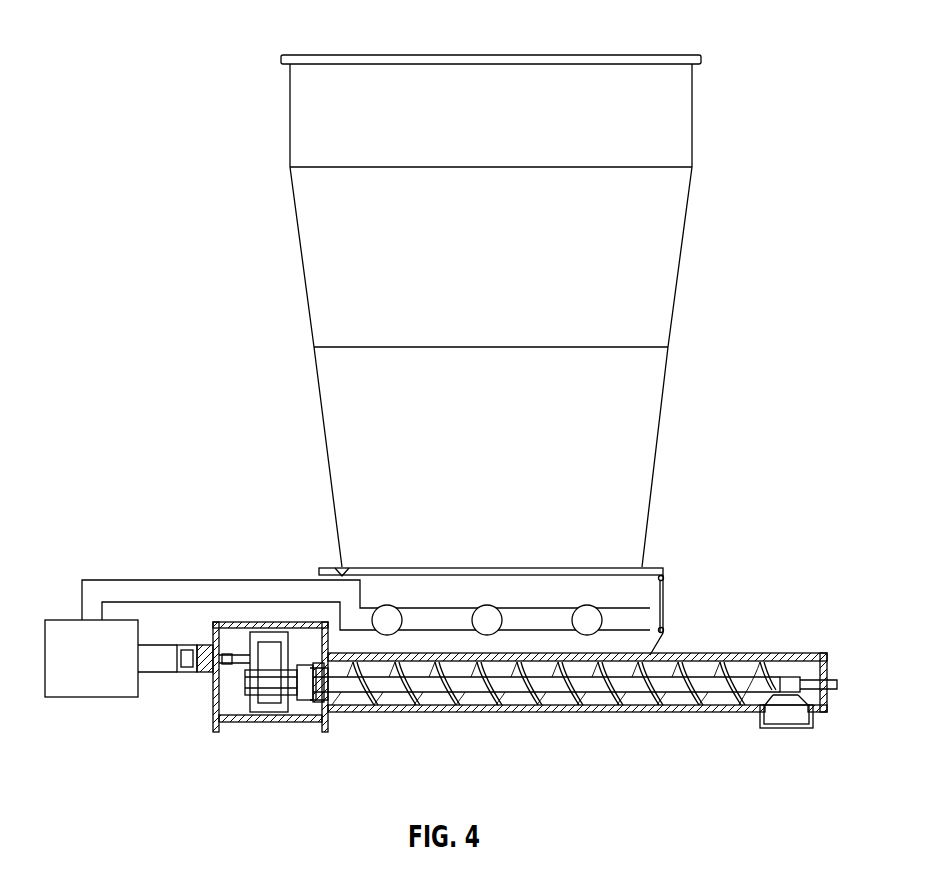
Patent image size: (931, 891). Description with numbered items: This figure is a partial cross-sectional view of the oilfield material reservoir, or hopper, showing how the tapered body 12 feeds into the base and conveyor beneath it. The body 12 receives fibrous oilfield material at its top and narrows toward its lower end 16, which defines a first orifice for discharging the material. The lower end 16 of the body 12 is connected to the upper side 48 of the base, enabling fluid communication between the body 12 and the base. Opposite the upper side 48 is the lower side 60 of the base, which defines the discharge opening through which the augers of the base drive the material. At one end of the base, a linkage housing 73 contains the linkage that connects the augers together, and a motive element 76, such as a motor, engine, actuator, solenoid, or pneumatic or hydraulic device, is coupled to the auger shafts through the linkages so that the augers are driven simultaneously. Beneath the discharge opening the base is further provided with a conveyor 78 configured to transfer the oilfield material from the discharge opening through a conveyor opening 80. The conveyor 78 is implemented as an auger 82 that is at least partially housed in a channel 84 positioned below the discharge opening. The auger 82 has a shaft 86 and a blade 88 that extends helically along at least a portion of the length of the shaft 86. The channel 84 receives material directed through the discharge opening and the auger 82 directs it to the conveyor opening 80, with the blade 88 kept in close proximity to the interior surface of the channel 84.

The body 12 is at (688, 205).
The lower end 16 is at (344, 566).
The upper side 48 is at (656, 566).
The linkage housing 73 is at (652, 598).
The motive element 76 is at (77, 685).
The channel 84 is at (355, 712).
The shaft 86 is at (405, 703).
The blade 88 is at (448, 703).
The auger 82 is at (485, 700).
The conveyor 78 is at (520, 700).
The lower side 60 is at (598, 705).
The conveyor opening 80 is at (790, 728).